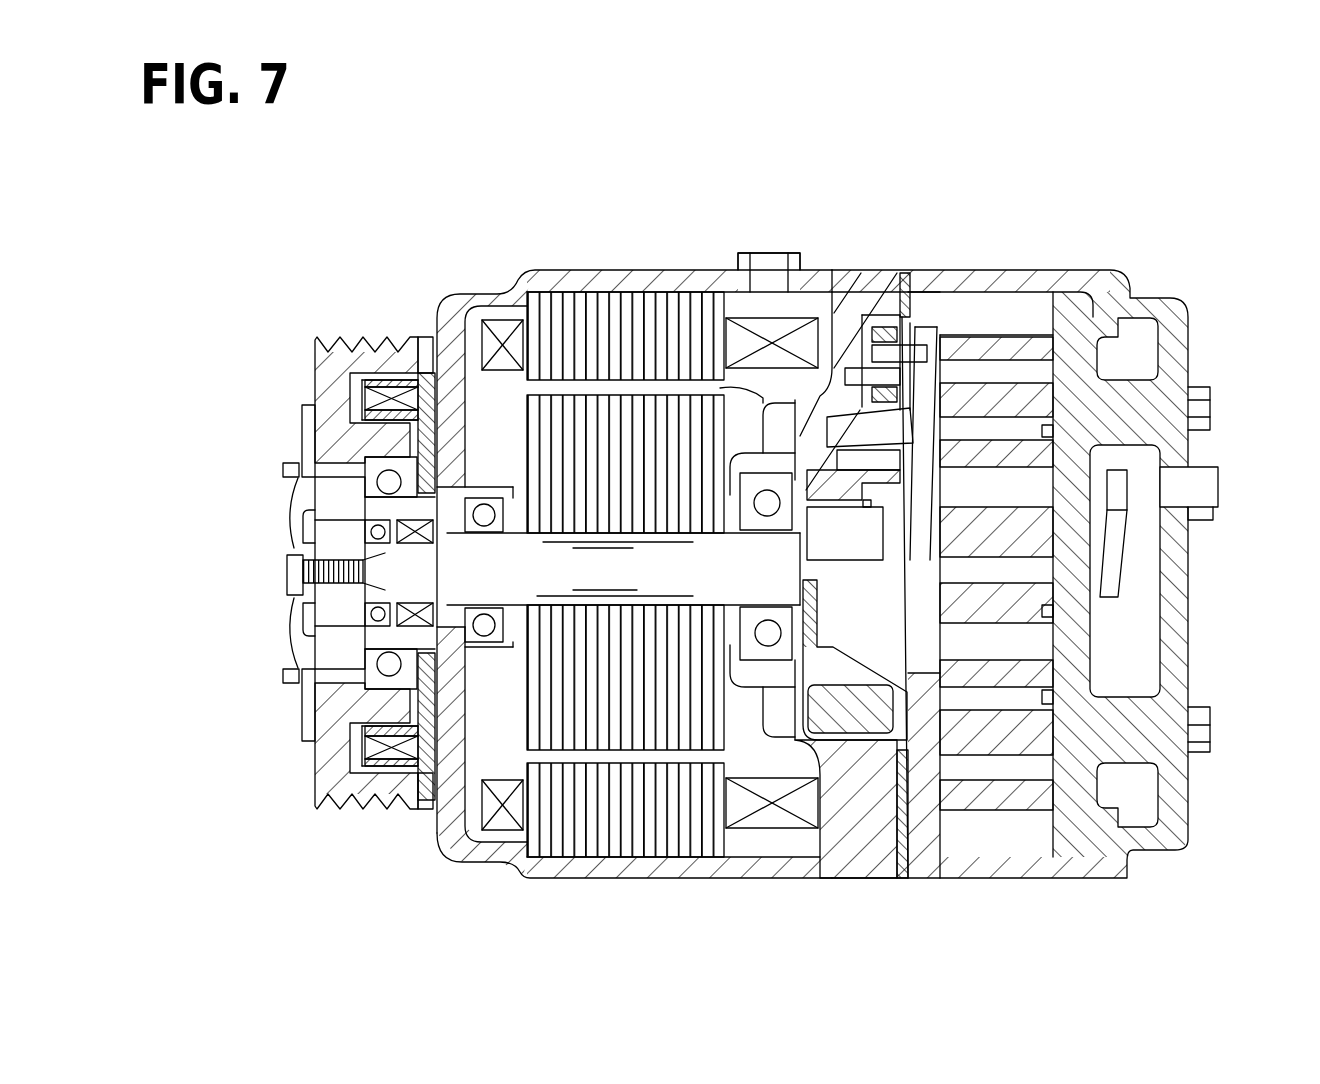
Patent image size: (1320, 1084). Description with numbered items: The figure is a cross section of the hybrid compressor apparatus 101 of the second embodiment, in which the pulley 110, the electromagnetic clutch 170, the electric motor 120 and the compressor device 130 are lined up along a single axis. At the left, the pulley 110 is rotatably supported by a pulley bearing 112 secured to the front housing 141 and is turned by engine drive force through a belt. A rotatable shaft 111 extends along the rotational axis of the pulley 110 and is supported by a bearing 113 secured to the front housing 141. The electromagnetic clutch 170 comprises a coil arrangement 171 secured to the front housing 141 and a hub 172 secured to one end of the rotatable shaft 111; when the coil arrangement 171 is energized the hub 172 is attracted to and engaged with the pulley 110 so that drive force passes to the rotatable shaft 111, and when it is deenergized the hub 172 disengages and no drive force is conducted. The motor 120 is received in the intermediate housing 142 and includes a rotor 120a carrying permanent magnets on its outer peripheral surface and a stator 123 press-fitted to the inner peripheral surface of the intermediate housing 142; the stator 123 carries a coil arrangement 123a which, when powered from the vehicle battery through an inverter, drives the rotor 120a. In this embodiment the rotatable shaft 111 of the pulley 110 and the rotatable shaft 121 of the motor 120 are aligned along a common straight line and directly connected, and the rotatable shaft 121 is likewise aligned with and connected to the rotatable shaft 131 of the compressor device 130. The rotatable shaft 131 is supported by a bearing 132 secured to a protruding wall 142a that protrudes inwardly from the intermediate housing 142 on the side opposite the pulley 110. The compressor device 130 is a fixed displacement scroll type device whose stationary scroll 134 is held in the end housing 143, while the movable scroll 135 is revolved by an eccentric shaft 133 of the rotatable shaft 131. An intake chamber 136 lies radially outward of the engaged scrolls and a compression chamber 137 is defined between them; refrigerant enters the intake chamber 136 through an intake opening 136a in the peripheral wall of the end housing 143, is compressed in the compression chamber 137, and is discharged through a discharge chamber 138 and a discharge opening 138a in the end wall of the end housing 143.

The hybrid compressor apparatus 101 is at (252, 436).
The pulley 110 is at (325, 778).
The rotatable shaft 111 is at (318, 602).
The pulley bearing 112 is at (340, 668).
The bearing 113 is at (483, 506).
The electric motor 120 is at (599, 262).
The rotor 120a is at (613, 705).
The rotatable shaft 121 is at (644, 560).
The stator 123 is at (668, 845).
The coil arrangement 123a is at (743, 798).
The compressor device 130 is at (1015, 258).
The rotatable shaft 131 is at (748, 585).
The bearing 132 is at (752, 492).
The eccentric shaft 133 is at (940, 345).
The stationary scroll 134 is at (1062, 850).
The movable scroll 135 is at (927, 787).
The intake chamber 136 is at (985, 478).
The intake opening 136a is at (767, 262).
The compression chamber 137 is at (1018, 310).
The discharge chamber 138 is at (1140, 582).
The discharge opening 138a is at (1207, 487).
The front housing 141 is at (536, 278).
The intermediate housing 142 is at (858, 300).
The protruding wall 142a is at (800, 470).
The end housing 143 is at (938, 278).
The electromagnetic clutch 170 is at (287, 232).
The coil arrangement 171 is at (390, 385).
The hub 172 is at (302, 434).